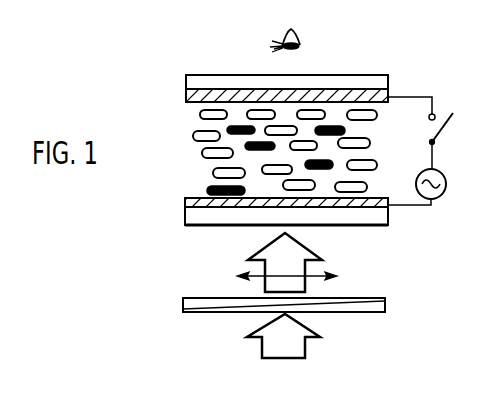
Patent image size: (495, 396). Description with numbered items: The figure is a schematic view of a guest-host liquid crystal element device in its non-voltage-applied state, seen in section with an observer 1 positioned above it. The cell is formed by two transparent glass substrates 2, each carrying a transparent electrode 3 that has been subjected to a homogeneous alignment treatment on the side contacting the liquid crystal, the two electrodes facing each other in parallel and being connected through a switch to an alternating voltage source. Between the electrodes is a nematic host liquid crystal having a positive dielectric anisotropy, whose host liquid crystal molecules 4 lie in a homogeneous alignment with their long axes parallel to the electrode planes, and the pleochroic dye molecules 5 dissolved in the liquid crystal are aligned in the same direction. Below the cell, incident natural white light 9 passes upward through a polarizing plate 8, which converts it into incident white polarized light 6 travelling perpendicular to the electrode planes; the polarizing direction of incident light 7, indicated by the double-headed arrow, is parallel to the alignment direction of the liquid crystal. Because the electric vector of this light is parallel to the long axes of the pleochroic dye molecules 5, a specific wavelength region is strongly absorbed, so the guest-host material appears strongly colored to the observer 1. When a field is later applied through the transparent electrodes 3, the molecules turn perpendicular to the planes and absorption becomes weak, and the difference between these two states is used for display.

The observer 1 is at (301, 44).
The transparent glass substrate 2 is at (187, 82).
The transparent electrode 3 is at (187, 95).
The nematic host liquid crystal molecule 4 is at (200, 153).
The pleochroic dye molecule 5 is at (205, 190).
The incident white polarized light 6 is at (325, 252).
The polarizing direction of incident light 7 is at (335, 270).
The polarizing plate 8 is at (385, 308).
The incident natural white light 9 is at (318, 333).